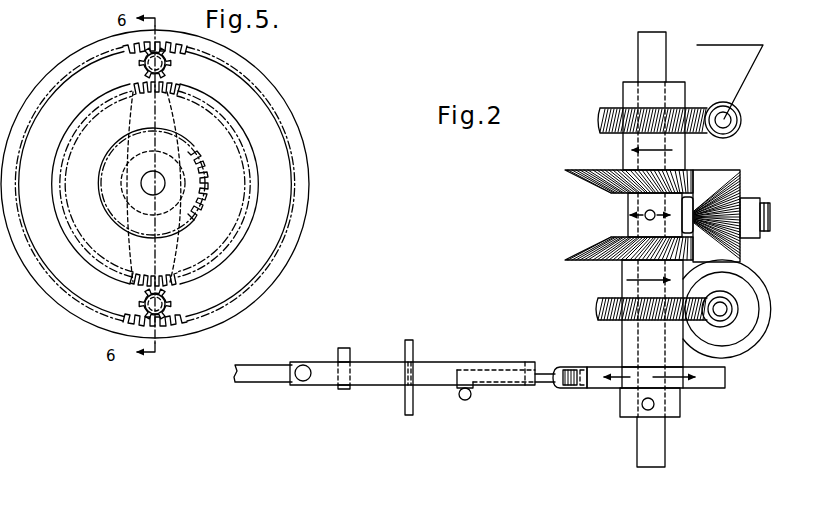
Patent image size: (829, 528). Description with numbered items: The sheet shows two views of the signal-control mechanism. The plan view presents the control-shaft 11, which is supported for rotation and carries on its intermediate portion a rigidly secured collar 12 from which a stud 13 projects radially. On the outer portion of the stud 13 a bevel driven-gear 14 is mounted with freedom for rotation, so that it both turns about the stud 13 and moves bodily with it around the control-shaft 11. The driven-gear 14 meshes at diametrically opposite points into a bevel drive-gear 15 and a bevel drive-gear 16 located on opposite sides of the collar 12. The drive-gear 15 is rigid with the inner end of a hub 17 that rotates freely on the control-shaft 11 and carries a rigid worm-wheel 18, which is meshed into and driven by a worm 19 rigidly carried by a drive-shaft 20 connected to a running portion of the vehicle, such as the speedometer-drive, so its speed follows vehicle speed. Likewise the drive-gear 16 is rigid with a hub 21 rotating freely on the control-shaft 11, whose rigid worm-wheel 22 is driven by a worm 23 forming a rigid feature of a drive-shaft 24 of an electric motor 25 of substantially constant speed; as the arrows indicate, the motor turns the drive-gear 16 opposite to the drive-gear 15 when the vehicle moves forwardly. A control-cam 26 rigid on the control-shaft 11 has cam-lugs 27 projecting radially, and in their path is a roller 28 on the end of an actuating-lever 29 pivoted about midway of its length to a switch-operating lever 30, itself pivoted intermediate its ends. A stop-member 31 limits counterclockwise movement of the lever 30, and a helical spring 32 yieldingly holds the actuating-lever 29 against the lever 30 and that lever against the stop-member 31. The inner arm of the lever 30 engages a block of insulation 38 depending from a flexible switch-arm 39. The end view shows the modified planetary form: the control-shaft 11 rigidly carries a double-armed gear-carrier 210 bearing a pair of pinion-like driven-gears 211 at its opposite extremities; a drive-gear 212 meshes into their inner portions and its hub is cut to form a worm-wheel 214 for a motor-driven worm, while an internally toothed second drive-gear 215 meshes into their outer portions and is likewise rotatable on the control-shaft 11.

In FIG. 5, the control-shaft 11 is at (150, 183).
In FIG. 2, the control-shaft 11 is at (665, 52).
In FIG. 2, the collar 12 is at (626, 226).
In FIG. 2, the stud 13 is at (686, 220).
In FIG. 2, the bevel driven-gear 14 is at (733, 243).
In FIG. 2, the bevel drive-gear 15 is at (584, 169).
In FIG. 2, the bevel drive-gear 16 is at (588, 262).
In FIG. 2, the hub 17 is at (625, 92).
In FIG. 2, the worm-wheel 18 is at (600, 118).
In FIG. 2, the worm 19 is at (722, 102).
In FIG. 2, the drive-shaft 20 is at (726, 120).
In FIG. 2, the hub 21 is at (623, 276).
In FIG. 2, the worm-wheel 22 is at (598, 308).
In FIG. 2, the worm 23 is at (726, 293).
In FIG. 2, the drive-shaft 24 is at (719, 316).
In FIG. 2, the electric motor 25 is at (750, 345).
In FIG. 2, the control-cam 26 is at (632, 383).
In FIG. 2, the cam-lugs 27 is at (593, 386).
In FIG. 2, the roller 28 is at (570, 367).
In FIG. 2, the actuating-lever 29 is at (455, 370).
In FIG. 2, the switch-operating lever 30 is at (334, 386).
In FIG. 2, the stop-member 31 is at (350, 355).
In FIG. 2, the helical spring 32 is at (466, 400).
In FIG. 2, the block of insulation 38 is at (296, 386).
In FIG. 2, the flexible switch-arm 39 is at (272, 378).
In FIG. 5, the double-armed gear-carrier 210 is at (175, 118).
In FIG. 5, the pinion-like driven-gears 211 is at (171, 67).
In FIG. 5, the drive-gear 212 is at (127, 84).
In FIG. 5, the worm-wheel 214 is at (206, 178).
In FIG. 5, the second drive-gear 215 is at (120, 55).